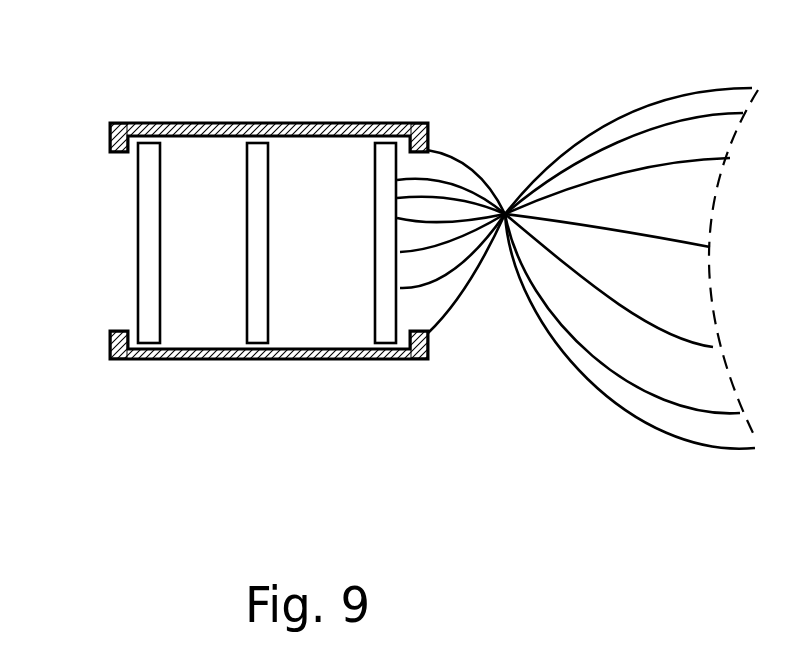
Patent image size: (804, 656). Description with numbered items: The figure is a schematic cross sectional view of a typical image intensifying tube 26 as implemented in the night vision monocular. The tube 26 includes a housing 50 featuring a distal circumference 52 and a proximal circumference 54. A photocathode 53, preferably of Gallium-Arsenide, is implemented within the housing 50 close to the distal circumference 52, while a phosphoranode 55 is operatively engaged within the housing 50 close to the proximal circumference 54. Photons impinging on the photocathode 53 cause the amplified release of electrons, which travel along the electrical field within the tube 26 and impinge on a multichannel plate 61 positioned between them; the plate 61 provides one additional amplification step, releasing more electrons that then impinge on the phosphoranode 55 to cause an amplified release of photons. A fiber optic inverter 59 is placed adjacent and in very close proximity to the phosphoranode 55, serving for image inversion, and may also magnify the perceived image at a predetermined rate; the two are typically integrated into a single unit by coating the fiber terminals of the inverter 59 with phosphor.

The image intensifying tube 26 is at (323, 45).
The housing 50 is at (253, 360).
The distal circumference 52 is at (110, 141).
The photocathode 53 is at (152, 335).
The proximal circumference 54 is at (430, 136).
The phosphoranode 55 is at (387, 335).
The fiber optic inverter 59 is at (645, 375).
The multichannel plate 61 is at (257, 158).